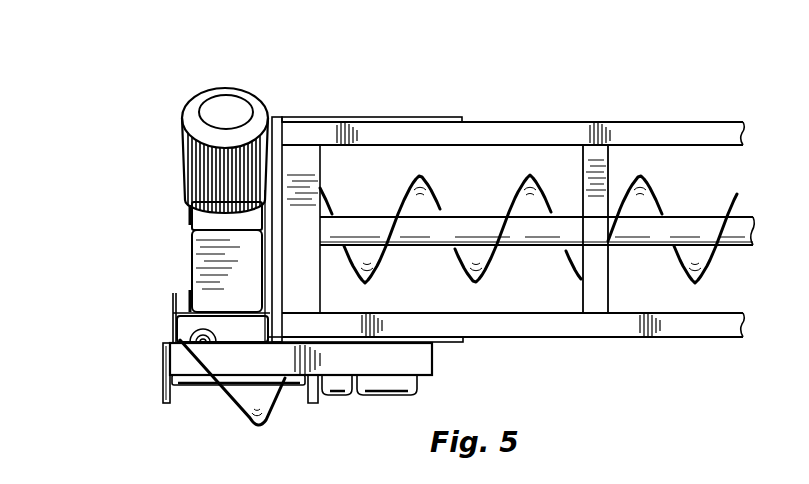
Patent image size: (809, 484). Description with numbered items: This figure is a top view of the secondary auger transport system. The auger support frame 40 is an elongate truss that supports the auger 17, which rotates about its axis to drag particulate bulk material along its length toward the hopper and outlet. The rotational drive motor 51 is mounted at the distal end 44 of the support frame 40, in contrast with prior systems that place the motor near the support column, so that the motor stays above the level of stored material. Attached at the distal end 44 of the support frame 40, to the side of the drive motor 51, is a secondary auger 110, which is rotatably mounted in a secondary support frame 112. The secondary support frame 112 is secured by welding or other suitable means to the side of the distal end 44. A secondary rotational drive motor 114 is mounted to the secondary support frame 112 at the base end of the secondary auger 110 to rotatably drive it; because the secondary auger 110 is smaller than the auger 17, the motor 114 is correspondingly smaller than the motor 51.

The rotational drive motor 51 is at (183, 160).
The distal end 44 is at (310, 117).
The auger 17 is at (517, 185).
The auger support frame 40 is at (675, 130).
The secondary support frame 112 is at (212, 368).
The secondary auger 110 is at (250, 402).
The secondary rotational drive motor 114 is at (372, 397).